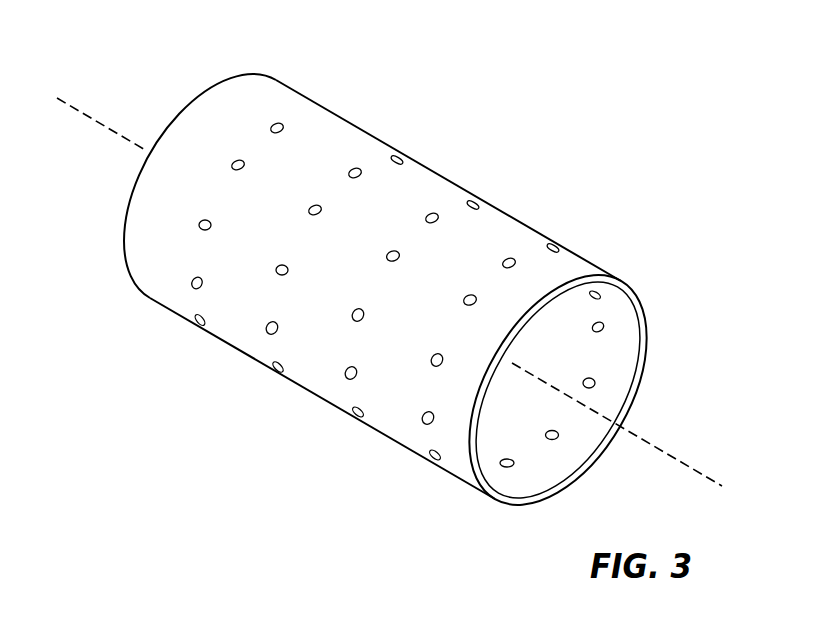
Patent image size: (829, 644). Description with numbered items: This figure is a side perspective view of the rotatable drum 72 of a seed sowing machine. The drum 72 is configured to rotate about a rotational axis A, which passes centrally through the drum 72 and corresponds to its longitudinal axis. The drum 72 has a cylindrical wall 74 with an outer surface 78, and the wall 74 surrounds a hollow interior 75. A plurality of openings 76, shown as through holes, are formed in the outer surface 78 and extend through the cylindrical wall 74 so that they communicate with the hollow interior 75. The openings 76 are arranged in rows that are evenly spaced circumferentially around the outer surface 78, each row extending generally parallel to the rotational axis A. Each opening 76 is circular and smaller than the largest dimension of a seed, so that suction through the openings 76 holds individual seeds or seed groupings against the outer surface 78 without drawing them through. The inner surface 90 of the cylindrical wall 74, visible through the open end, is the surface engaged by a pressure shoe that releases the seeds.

The rotatable drum 72 is at (419, 304).
The cylindrical wall 74 is at (638, 302).
The hollow interior 75 is at (617, 393).
The openings 76 is at (290, 267).
The outer surface 78 is at (507, 232).
The inner surface 90 is at (614, 347).
The rotational axis A is at (75, 108).